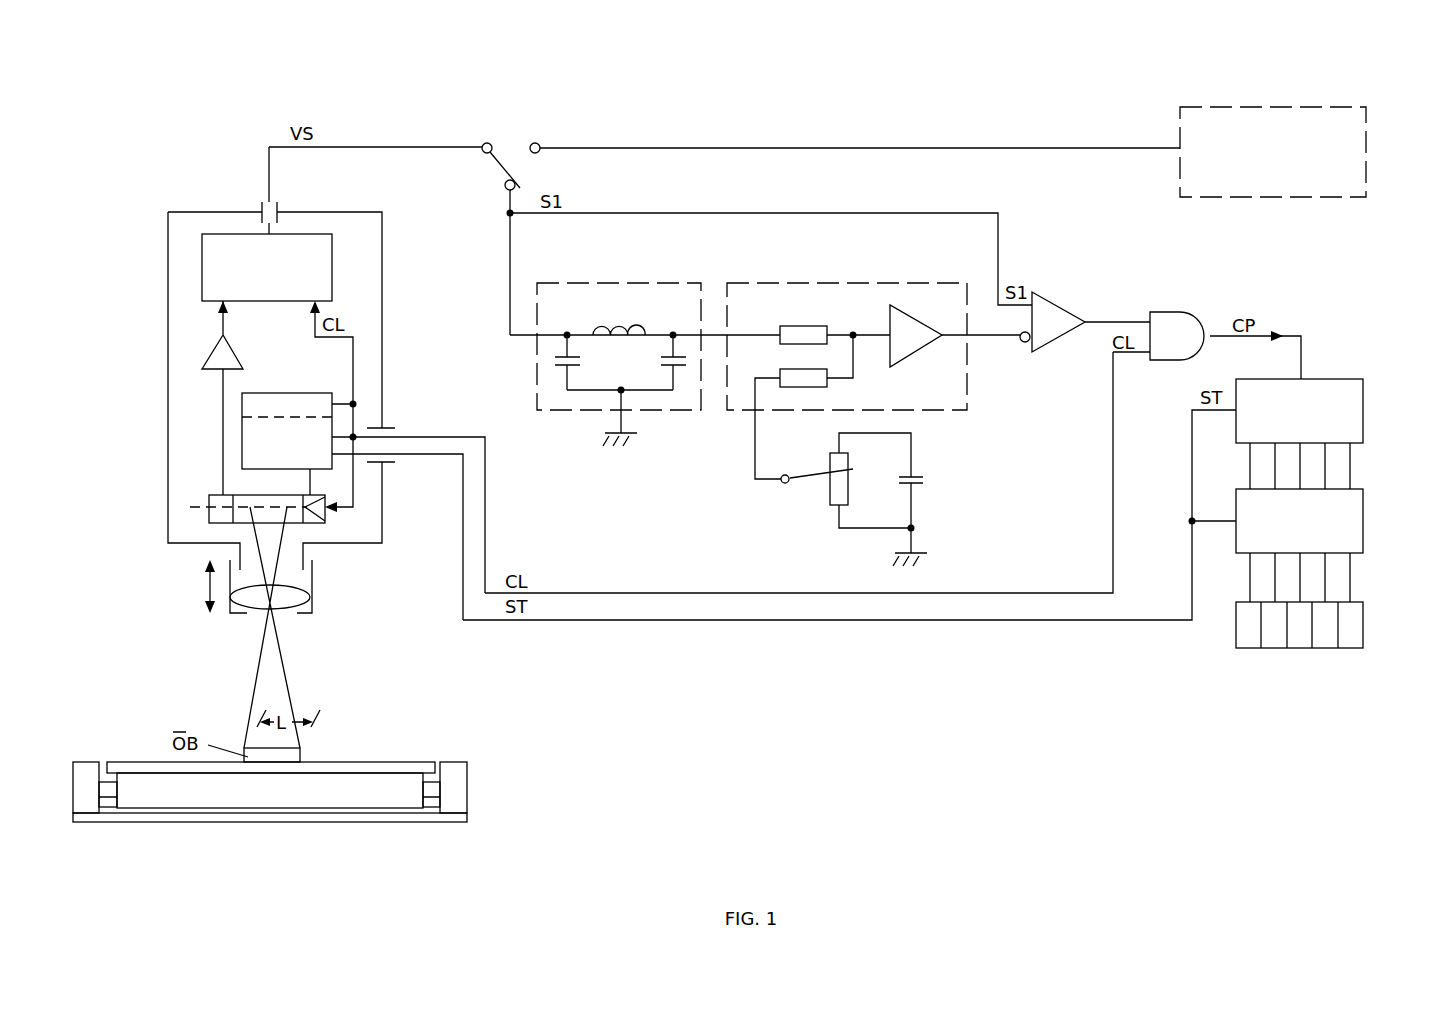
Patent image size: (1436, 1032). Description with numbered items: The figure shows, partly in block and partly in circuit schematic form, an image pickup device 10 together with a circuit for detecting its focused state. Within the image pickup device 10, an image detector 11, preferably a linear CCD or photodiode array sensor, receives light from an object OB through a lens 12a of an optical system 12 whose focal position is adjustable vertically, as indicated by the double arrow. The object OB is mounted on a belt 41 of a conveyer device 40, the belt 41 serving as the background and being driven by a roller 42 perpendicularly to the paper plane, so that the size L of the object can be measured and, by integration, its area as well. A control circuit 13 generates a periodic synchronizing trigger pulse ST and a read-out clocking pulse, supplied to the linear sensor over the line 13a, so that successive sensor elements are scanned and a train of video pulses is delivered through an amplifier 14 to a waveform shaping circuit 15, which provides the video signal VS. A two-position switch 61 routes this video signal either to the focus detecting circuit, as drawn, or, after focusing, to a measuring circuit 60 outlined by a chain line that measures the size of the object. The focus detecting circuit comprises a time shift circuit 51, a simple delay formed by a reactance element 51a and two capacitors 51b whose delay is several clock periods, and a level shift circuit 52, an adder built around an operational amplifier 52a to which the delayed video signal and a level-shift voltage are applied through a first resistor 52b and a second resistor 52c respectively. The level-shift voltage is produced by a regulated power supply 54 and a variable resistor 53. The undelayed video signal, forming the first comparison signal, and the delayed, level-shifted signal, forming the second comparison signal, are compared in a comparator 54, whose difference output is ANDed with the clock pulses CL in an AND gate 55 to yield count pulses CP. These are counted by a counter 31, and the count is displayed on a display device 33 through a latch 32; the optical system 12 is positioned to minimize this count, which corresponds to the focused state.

The image pickup device 10 is at (168, 403).
The image detector 11 is at (218, 523).
The optical system 12 is at (237, 613).
The lens 12a is at (283, 603).
The control circuit 13 is at (242, 440).
The signal line 13a is at (262, 419).
The amplifier 14 is at (208, 352).
The waveform shaping circuit 15 is at (202, 272).
The counter 31 is at (1363, 412).
The latch 32 is at (1363, 527).
The display device 33 is at (1363, 625).
The conveyer device 40 is at (468, 792).
The belt 41 is at (405, 768).
The roller 42 is at (395, 800).
The time shift circuit 51 is at (620, 350).
The reactance element 51a is at (617, 327).
The capacitors 51b is at (562, 364).
The level shift circuit 52 is at (869, 359).
The operational amplifier 52a is at (921, 305).
The resistor 52b is at (803, 326).
The resistor 52c is at (785, 369).
The variable resistor 53 is at (828, 492).
The comparator 54 is at (915, 487).
The AND gate 55 is at (1180, 312).
The measuring circuit 60 is at (1366, 168).
The two-position switch 61 is at (512, 150).